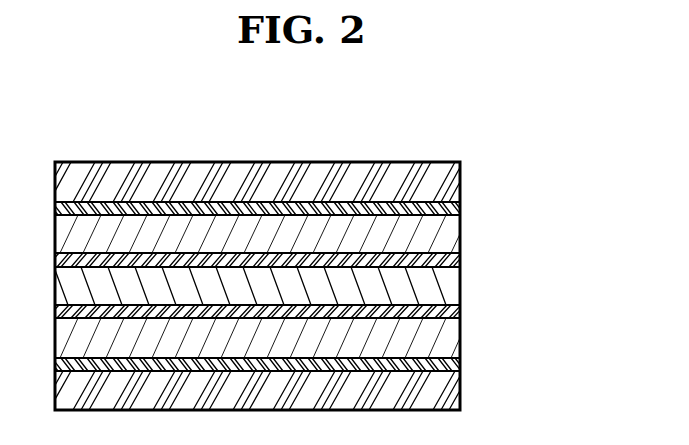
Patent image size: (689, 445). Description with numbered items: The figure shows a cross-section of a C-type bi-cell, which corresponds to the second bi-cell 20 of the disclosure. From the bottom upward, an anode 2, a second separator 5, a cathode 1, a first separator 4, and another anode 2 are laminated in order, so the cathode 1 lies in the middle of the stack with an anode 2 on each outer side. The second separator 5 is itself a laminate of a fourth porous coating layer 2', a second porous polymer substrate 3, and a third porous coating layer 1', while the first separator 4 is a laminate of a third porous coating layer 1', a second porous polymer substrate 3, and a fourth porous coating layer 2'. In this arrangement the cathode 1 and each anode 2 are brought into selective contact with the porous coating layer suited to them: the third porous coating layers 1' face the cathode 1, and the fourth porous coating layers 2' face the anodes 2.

The second bi-cell 20 is at (275, 144).
The cathode 1 is at (279, 286).
The third porous coating layer 1' is at (281, 286).
The anode 2 is at (279, 286).
The fourth porous coating layer 2' is at (281, 286).
The second porous polymer substrate 3 is at (447, 238).
The first separator 4 is at (519, 205).
The second separator 5 is at (519, 308).